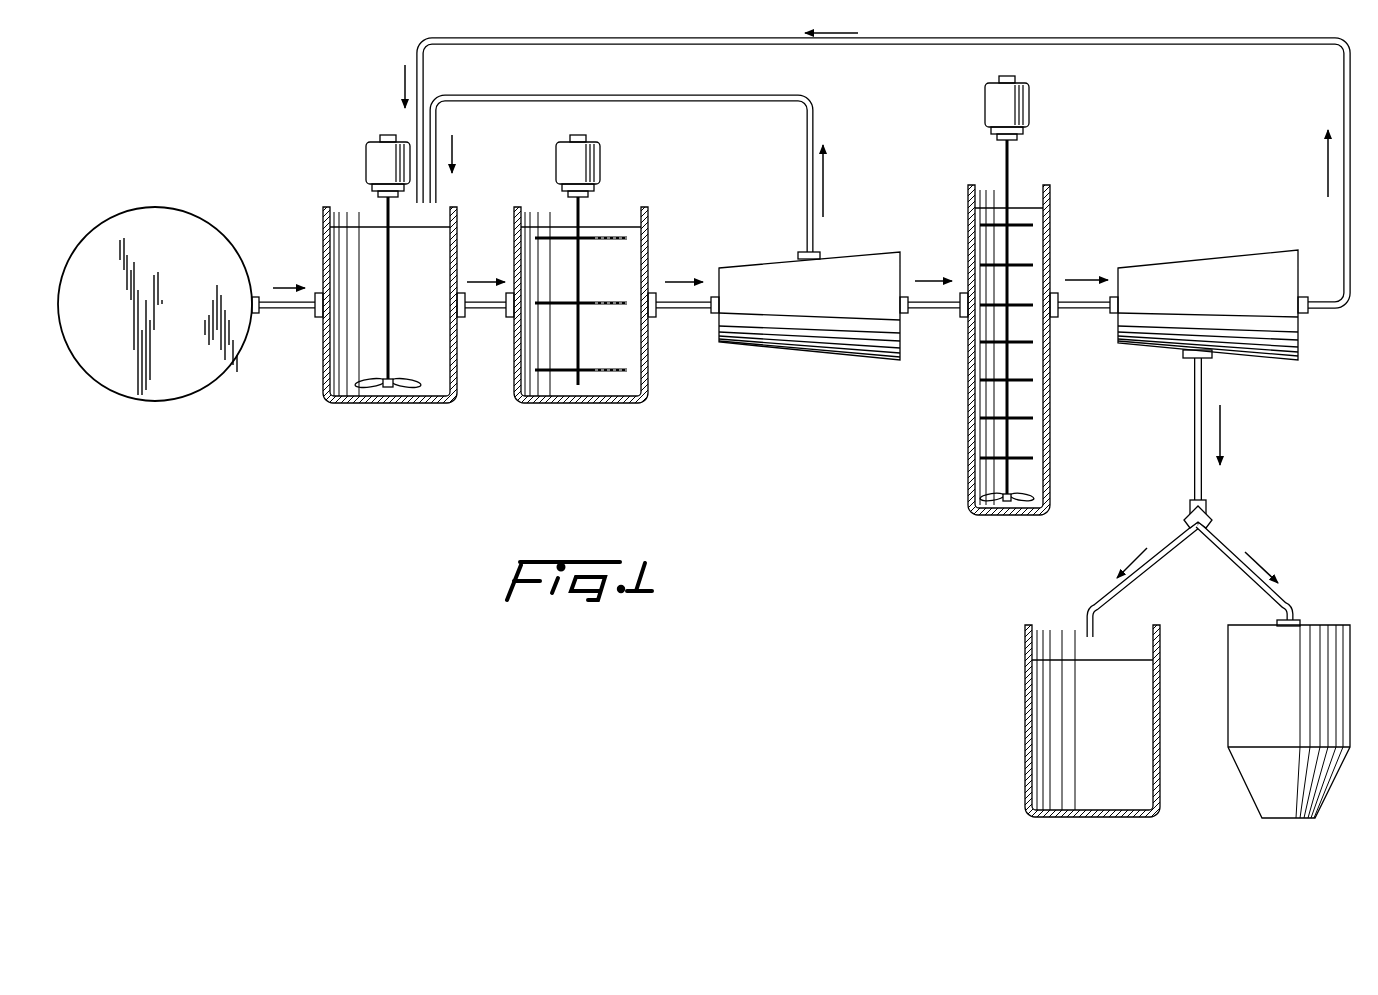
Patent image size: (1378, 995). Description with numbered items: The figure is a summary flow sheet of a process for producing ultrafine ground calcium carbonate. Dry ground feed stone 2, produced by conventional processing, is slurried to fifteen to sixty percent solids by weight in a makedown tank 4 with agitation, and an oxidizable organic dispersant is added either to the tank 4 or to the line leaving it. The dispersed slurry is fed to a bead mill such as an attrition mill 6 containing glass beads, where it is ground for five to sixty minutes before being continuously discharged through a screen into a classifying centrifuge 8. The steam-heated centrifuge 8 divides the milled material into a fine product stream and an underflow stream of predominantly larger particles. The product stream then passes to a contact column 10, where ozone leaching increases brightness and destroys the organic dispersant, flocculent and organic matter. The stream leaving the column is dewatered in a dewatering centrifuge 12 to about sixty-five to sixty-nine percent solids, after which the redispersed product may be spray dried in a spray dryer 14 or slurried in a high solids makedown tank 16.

The dry ground feed stone 2 is at (127, 218).
The makedown tank 4 is at (322, 392).
The attrition mill 6 is at (648, 395).
The classifying centrifuge 8 is at (827, 347).
The contact column 10 is at (1050, 212).
The dewatering centrifuge 12 is at (1212, 266).
The spray dryer 14 is at (1235, 706).
The high solids makedown tank 16 is at (1025, 676).